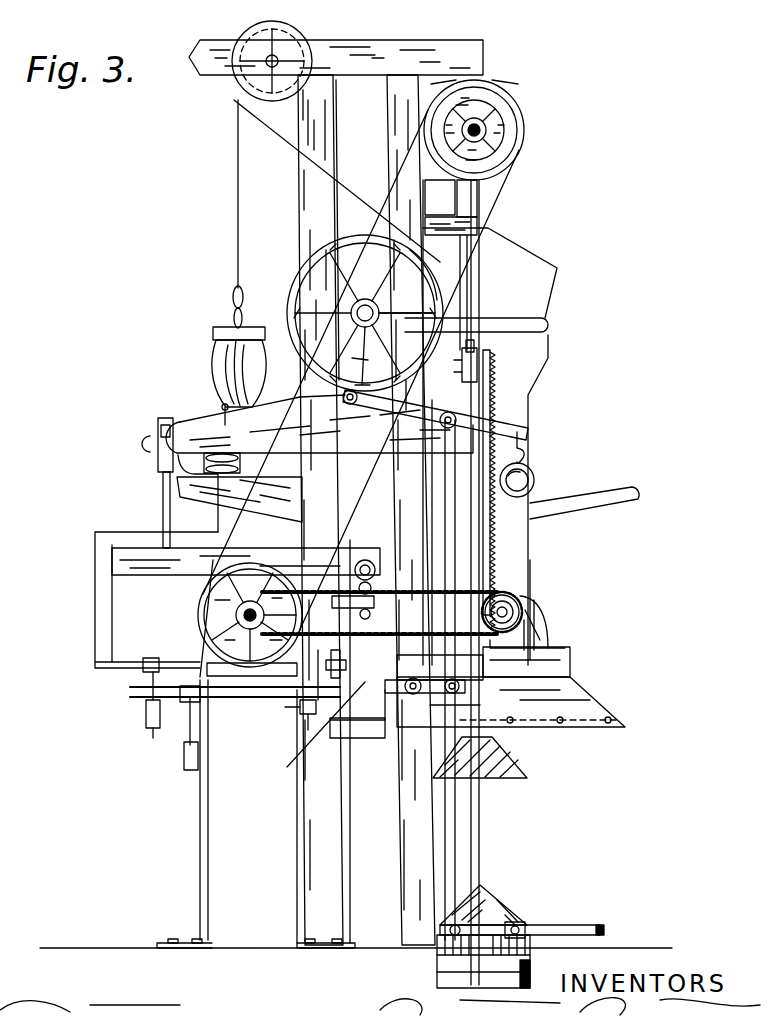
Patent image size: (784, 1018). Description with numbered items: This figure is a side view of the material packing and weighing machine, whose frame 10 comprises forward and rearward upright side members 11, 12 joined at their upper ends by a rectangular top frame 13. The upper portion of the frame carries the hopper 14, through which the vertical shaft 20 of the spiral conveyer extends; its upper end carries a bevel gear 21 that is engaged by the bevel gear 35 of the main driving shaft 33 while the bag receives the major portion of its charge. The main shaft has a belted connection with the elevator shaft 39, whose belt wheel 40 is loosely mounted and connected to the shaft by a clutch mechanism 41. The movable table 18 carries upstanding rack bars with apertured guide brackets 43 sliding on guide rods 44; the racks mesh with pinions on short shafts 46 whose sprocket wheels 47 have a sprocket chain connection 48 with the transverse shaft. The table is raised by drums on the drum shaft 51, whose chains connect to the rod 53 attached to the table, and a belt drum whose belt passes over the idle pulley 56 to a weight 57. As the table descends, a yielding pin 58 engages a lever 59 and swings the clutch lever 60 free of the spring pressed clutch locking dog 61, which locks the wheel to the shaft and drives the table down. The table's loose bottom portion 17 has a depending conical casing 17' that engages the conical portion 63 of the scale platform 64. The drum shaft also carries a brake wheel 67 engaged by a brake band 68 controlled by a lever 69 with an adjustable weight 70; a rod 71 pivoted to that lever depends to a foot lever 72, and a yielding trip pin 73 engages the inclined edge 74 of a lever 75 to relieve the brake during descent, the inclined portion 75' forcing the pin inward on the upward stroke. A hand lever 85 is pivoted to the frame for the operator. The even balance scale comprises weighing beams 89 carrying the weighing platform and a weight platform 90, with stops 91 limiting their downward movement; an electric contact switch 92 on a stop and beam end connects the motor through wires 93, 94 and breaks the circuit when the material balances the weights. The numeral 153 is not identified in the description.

The frame 10 is at (328, 96).
The forward upright side member 11 is at (390, 130).
The rearward upright side member 12 is at (334, 130).
The rectangular top frame 13 is at (365, 48).
The hopper 14 is at (545, 277).
The loose bottom portion 17 is at (429, 720).
The conical casing 17' is at (486, 757).
The movable table 18 is at (612, 728).
The vertical shaft 20 is at (480, 200).
The bevel gear 21 is at (512, 87).
The main driving shaft 33 is at (494, 120).
The bevel gear 35 is at (511, 135).
The elevator shaft 39 is at (246, 505).
The belt wheel 40 is at (215, 628).
The clutch mechanism 41 is at (233, 690).
The apertured guide bracket 43 is at (465, 378).
The guide rod 44 is at (482, 345).
The short shaft 46 is at (522, 598).
The sprocket wheel 47 is at (538, 608).
The sprocket chain connection 48 is at (408, 585).
The drum shaft 51 is at (318, 290).
The rod 53 is at (236, 258).
The idle pulley 56 is at (264, 97).
The weight 57 is at (212, 362).
The yielding pin 58 is at (315, 575).
The lever 59 is at (304, 706).
The clutch lever 60 is at (341, 660).
The clutch locking dog 61 is at (238, 615).
The conical portion 63 is at (505, 898).
The scale platform 64 is at (436, 976).
The brake wheel 67 is at (422, 262).
The brake band 68 is at (406, 270).
The lever 69 is at (528, 436).
The weight 70 is at (533, 478).
The rod 71 is at (448, 532).
The foot lever 72 is at (564, 928).
The yielding trip pin 73 is at (355, 584).
The inclined edge 74 is at (366, 692).
The lever 75 is at (357, 742).
The inclined portion 75' is at (311, 732).
The hand lever 85 is at (616, 492).
The weighing beam 89 is at (288, 443).
The weight platform 90 is at (134, 552).
The stop 91 is at (196, 480).
The electric contact switch 92 is at (212, 450).
The wire 93 is at (102, 588).
The wire 94 is at (222, 404).
The sprocket 153 is at (366, 560).